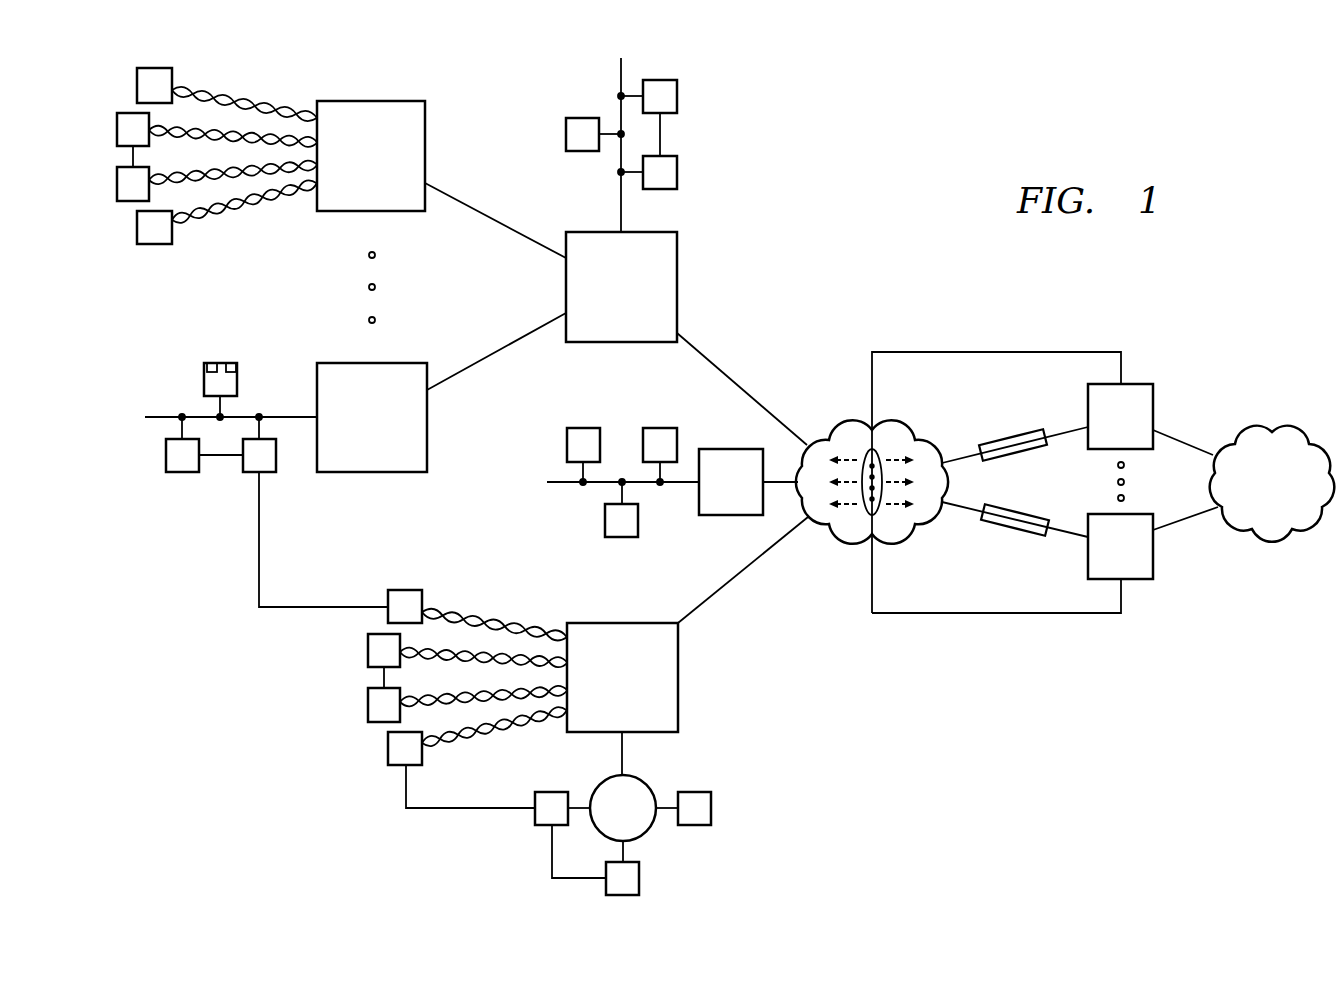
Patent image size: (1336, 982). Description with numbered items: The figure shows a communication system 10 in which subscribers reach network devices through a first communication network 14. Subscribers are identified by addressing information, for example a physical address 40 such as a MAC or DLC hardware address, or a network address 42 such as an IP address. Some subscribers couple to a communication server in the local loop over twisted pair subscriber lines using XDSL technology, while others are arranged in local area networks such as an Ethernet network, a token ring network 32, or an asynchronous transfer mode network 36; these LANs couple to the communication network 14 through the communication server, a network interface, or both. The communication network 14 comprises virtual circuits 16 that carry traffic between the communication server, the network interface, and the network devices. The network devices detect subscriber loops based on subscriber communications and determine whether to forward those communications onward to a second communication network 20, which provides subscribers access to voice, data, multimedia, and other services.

The communication system 10 is at (1050, 300).
The communication network 14 is at (842, 534).
The virtual circuit 16 is at (872, 450).
The communication network 20 is at (1278, 530).
The token ring network 32 is at (608, 822).
The asynchronous transfer mode network 36 is at (621, 82).
The physical address 40 is at (212, 363).
The network address 42 is at (231, 363).